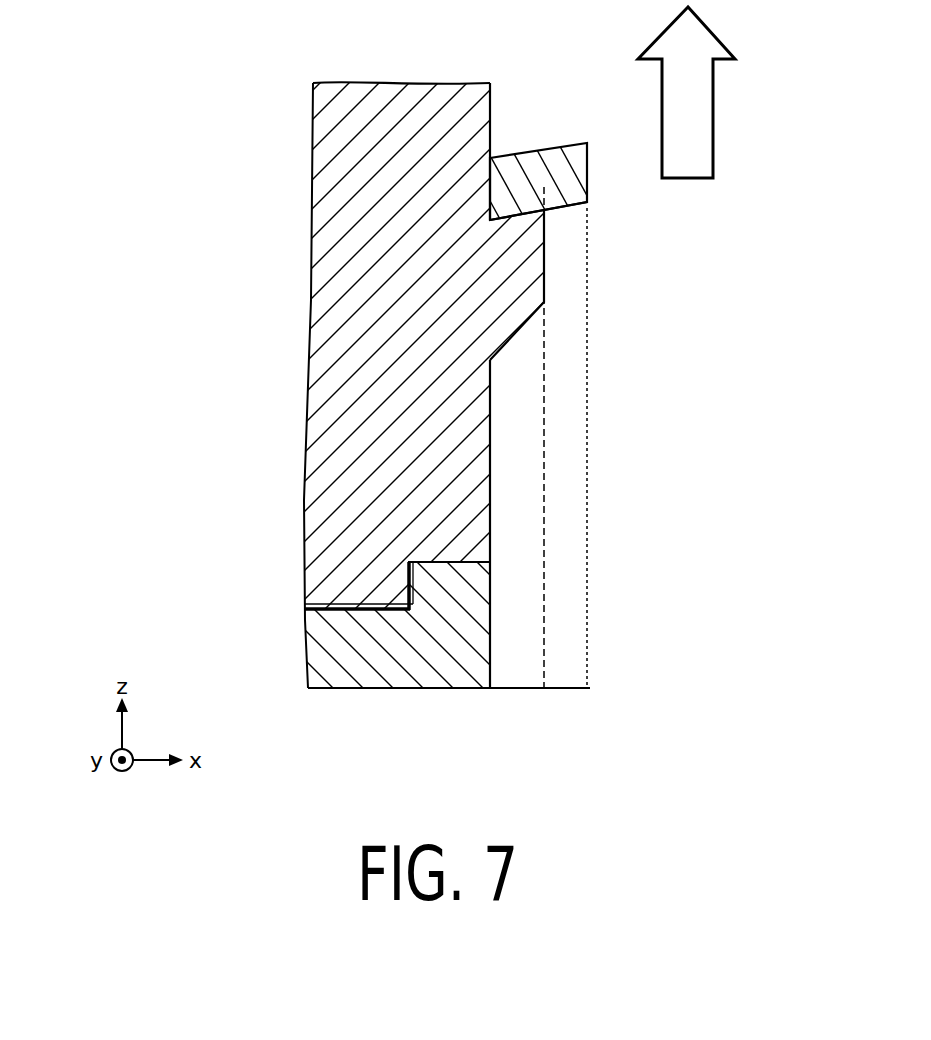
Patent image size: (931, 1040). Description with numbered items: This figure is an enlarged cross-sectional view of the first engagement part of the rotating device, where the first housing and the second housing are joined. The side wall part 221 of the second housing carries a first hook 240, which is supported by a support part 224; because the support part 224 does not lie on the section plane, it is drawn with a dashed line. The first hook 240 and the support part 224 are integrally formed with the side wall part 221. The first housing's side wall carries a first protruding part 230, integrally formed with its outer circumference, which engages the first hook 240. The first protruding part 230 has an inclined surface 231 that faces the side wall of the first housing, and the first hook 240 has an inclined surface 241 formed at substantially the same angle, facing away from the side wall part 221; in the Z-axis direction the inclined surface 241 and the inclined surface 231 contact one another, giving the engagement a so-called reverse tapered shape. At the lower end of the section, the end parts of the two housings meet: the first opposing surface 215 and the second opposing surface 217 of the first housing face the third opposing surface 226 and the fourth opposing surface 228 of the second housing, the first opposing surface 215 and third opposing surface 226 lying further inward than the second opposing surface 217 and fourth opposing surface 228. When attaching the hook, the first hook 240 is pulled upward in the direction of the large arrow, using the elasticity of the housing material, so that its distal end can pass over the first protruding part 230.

The first opposing surface 215 is at (371, 622).
The second opposing surface 217 is at (418, 578).
The side wall part 221 is at (492, 519).
The support part 224 is at (558, 419).
The third opposing surface 226 is at (352, 613).
The fourth opposing surface 228 is at (418, 572).
The first protruding part 230 is at (488, 290).
The inclined surface 231 is at (513, 216).
The first hook 240 is at (576, 129).
The inclined surface 241 is at (542, 212).